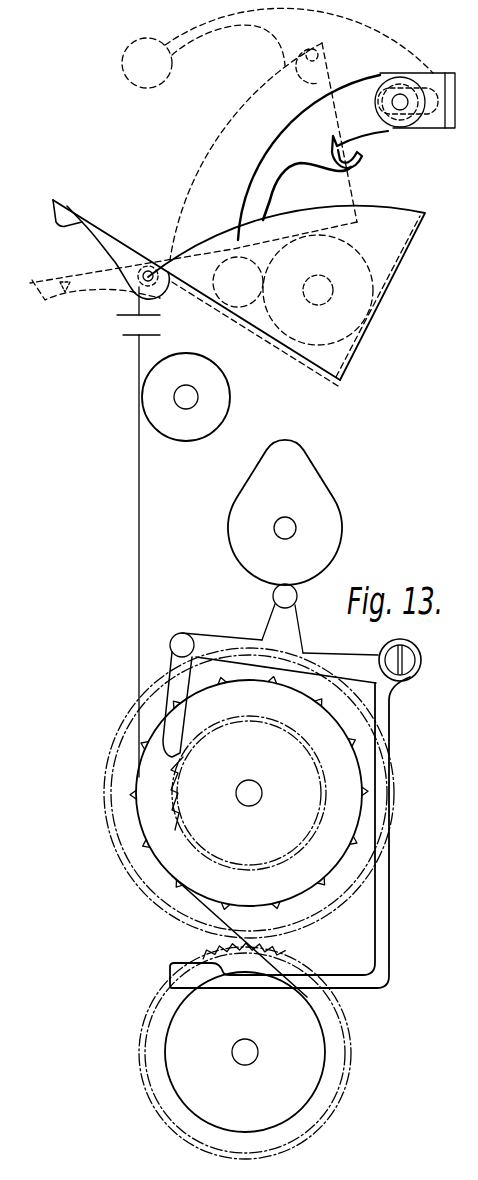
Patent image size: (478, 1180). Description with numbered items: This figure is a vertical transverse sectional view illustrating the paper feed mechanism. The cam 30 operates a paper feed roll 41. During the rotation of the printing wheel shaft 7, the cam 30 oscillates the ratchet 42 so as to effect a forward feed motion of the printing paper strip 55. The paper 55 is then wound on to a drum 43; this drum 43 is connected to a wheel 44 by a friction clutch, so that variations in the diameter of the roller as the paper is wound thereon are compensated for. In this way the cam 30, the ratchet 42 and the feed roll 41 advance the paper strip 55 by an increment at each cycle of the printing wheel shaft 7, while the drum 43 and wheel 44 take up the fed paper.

The printing wheel shaft 7 is at (187, 393).
The cam 30 is at (293, 467).
The printing paper strip 55 is at (140, 506).
The ratchet 42 is at (172, 676).
The paper feed roll 41 is at (290, 873).
The wheel 44 is at (158, 998).
The drum 43 is at (167, 1057).